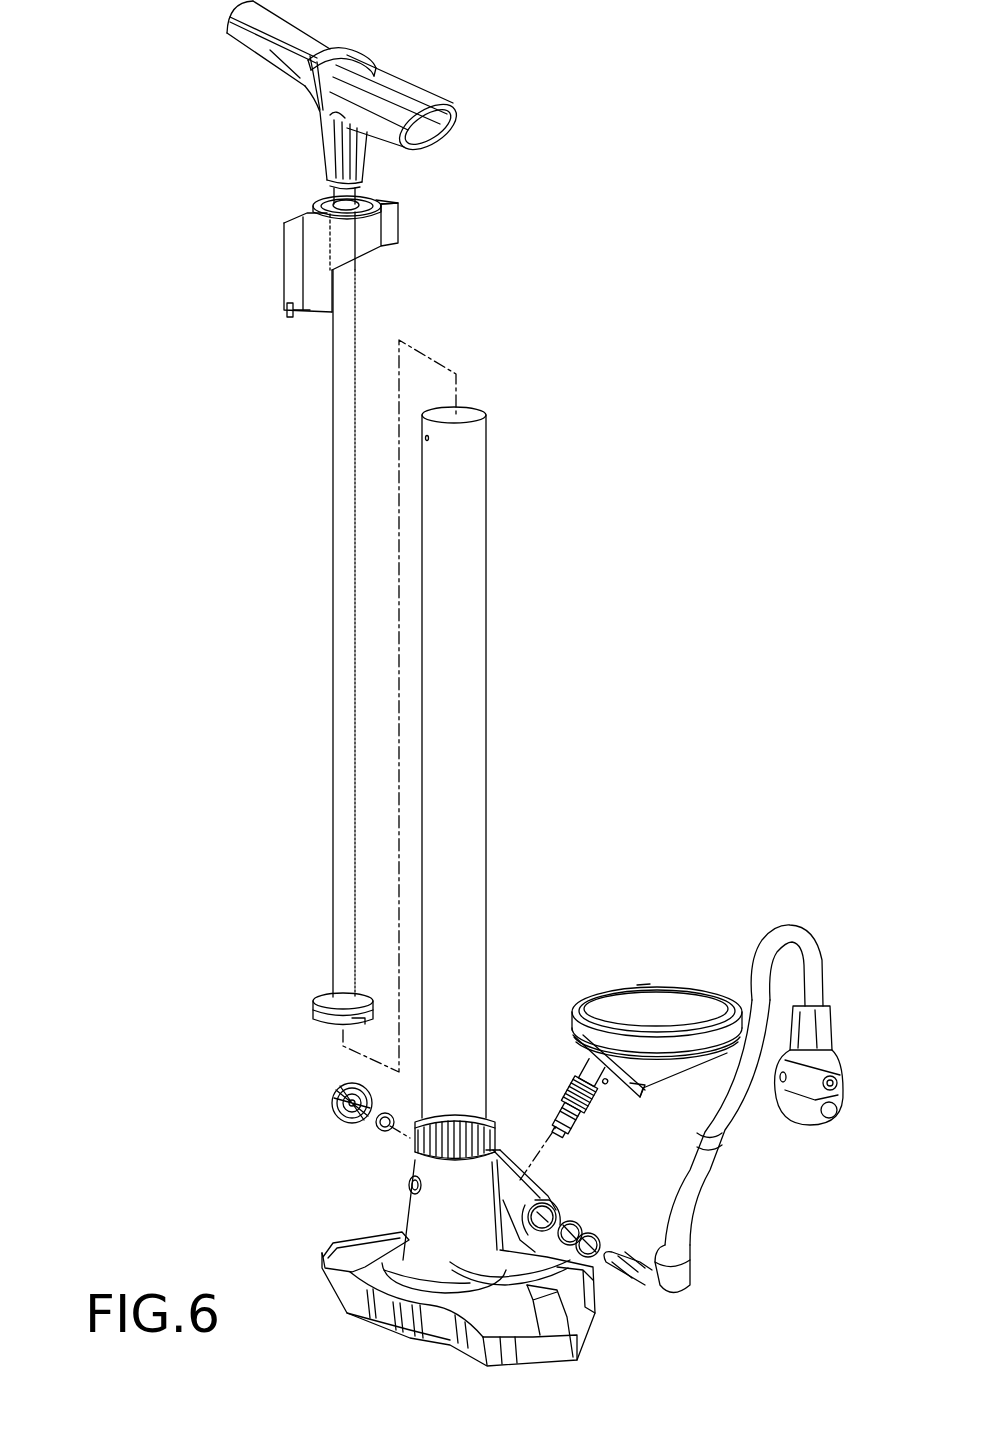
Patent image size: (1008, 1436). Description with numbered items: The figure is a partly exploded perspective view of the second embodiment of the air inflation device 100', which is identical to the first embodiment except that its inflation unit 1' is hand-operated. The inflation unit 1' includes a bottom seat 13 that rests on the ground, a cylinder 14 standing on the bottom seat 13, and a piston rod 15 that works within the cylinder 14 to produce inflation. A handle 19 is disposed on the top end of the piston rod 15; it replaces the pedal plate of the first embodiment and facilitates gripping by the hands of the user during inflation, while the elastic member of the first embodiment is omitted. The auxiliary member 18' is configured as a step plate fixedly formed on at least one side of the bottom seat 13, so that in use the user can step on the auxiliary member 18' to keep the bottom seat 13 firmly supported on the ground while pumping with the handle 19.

The inflation unit 1' is at (348, 513).
The air inflation device 100' is at (558, 858).
The bottom seat 13 is at (357, 1305).
The cylinder 14 is at (447, 735).
The piston rod 15 is at (343, 567).
The auxiliary member 18' is at (341, 1236).
The handle 19 is at (397, 91).